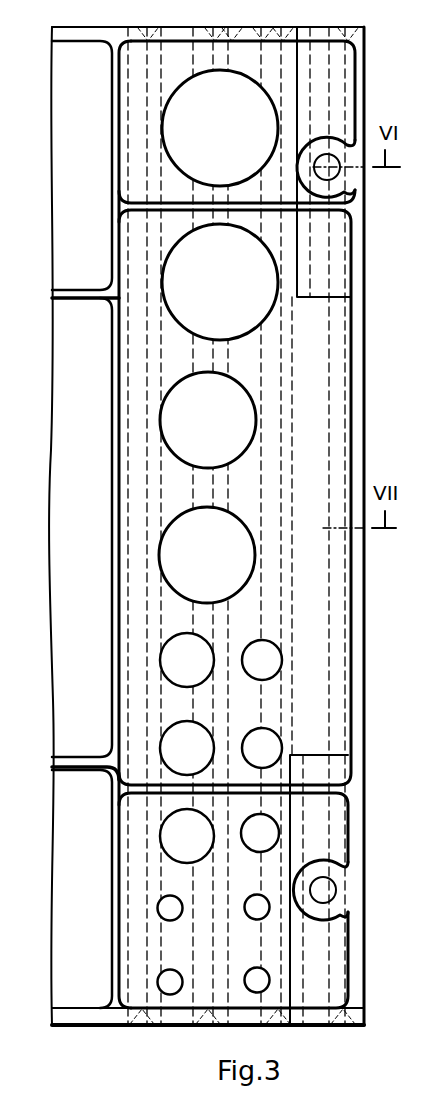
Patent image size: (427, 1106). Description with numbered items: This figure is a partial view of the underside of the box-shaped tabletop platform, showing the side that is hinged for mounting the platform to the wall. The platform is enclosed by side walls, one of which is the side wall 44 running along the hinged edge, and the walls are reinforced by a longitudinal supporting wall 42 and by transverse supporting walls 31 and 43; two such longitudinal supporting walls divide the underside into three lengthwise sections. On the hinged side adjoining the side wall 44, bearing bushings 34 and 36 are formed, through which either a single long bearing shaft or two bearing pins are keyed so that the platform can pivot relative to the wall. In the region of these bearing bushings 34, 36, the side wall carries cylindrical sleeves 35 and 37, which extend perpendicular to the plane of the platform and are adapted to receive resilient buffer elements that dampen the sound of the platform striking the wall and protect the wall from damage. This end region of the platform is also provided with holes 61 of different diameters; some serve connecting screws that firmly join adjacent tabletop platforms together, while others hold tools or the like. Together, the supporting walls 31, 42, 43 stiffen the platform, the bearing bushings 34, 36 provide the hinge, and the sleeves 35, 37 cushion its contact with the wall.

The transverse supporting wall 31 is at (112, 470).
The bearing bushing 34 is at (322, 298).
The cylindrical sleeve 35 is at (350, 192).
The bearing bushing 36 is at (291, 822).
The cylindrical sleeve 37 is at (342, 912).
The longitudinal supporting wall 42 is at (73, 289).
The transverse supporting wall 43 is at (114, 130).
The side wall 44 is at (359, 661).
The hole 61 is at (258, 433).